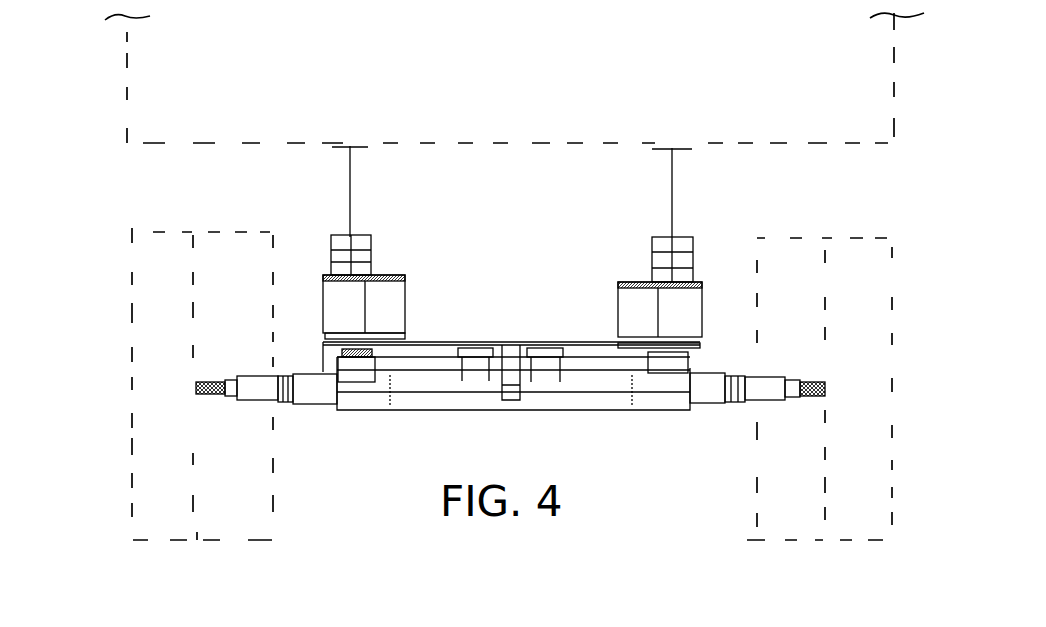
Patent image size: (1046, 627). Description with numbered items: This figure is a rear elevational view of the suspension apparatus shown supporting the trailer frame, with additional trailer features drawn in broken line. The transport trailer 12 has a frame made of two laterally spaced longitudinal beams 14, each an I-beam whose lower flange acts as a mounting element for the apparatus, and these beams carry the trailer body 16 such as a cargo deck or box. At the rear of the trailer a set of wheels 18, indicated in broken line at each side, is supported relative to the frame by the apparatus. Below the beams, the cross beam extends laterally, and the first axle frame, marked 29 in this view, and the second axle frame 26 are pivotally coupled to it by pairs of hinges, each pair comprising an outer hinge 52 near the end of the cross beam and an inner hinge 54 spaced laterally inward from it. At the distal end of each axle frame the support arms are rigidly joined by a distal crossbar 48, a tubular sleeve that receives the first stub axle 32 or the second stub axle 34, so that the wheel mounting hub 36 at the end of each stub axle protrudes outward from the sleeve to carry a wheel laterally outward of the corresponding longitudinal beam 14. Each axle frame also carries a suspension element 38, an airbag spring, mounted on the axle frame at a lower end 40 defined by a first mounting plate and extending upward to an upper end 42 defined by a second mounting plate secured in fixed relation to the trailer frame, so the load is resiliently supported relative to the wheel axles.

The transport trailer 12 is at (120, 156).
The longitudinal beams 14 is at (355, 192).
The trailer body 16 is at (895, 58).
The wheels 18 is at (162, 232).
The second axle frame 26 is at (604, 423).
The first housing portion 29 is at (417, 424).
The first stub axle 32 is at (250, 385).
The second stub axle 34 is at (758, 384).
The wheel mounting hub 36 is at (207, 398).
The suspension element 38 is at (380, 301).
The lower end 40 is at (406, 328).
The upper end 42 is at (372, 275).
The distal crossbar 48 is at (531, 405).
The outer hinge 52 is at (356, 368).
The inner hinge 54 is at (542, 332).